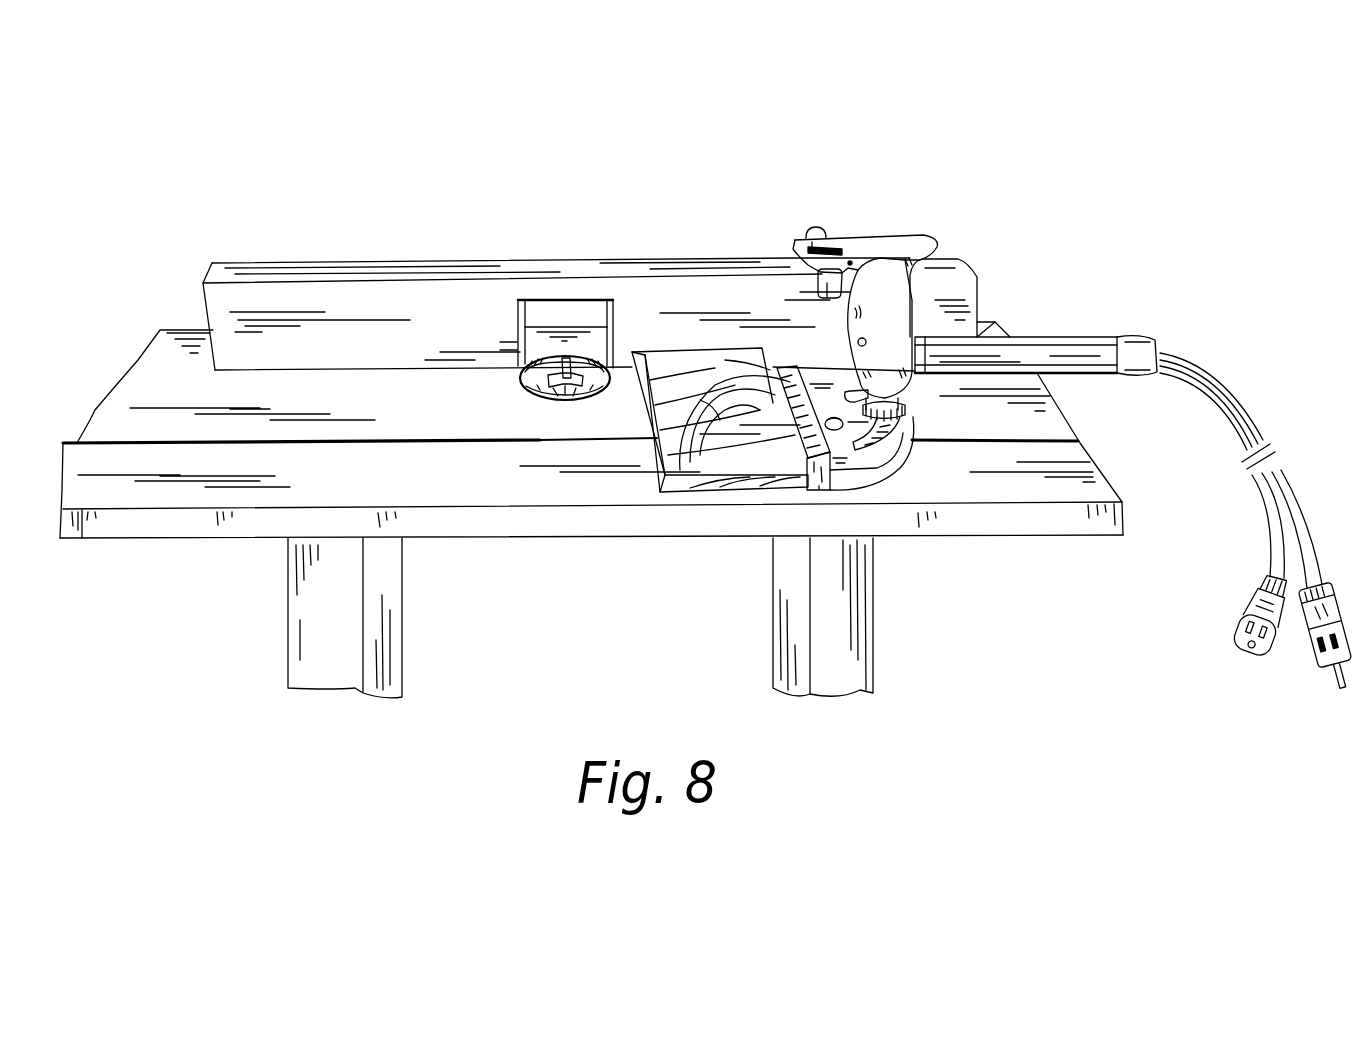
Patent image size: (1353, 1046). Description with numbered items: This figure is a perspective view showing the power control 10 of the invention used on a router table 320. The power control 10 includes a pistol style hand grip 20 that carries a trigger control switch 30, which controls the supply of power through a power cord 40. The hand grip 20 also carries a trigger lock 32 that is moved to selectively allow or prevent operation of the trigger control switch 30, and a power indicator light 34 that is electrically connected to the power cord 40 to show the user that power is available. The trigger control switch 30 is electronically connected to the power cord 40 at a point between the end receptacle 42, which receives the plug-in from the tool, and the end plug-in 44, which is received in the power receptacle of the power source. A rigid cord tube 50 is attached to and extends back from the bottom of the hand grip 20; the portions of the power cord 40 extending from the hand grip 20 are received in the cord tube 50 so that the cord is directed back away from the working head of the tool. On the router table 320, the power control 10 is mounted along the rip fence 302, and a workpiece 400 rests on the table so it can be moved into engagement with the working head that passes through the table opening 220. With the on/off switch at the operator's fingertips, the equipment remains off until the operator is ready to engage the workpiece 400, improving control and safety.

The power control 10 is at (980, 233).
The hand grip 20 is at (840, 316).
The trigger control switch 30 is at (818, 286).
The trigger lock 32 is at (838, 237).
The power indicator light 34 is at (818, 228).
The power cord 40 is at (1256, 538).
The end receptacle 42 is at (1248, 647).
The end plug-in 44 is at (1318, 657).
The cord tube 50 is at (1025, 350).
The blade opening 220 is at (527, 381).
The rip fence 302 is at (387, 287).
The router table 320 is at (993, 520).
The workpiece 400 is at (712, 389).